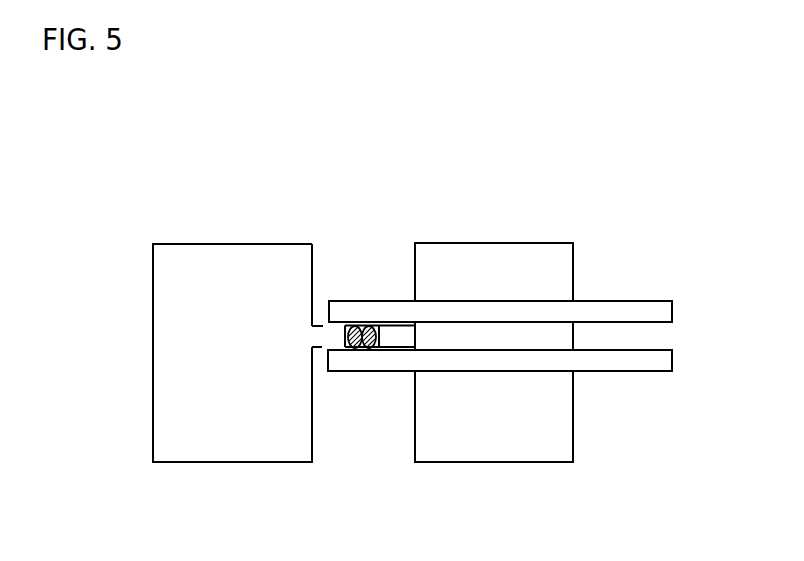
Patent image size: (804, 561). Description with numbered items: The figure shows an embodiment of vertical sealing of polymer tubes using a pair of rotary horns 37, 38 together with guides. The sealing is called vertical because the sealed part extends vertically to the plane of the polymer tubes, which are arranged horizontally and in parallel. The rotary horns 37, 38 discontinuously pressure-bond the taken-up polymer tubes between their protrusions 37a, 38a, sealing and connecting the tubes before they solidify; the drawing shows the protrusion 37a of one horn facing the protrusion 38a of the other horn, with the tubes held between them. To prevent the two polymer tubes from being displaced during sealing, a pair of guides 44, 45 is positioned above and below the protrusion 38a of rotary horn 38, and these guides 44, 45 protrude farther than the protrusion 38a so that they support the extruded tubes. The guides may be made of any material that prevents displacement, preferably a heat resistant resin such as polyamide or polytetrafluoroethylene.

The rotary horn 37 is at (249, 243).
The protrusion 37a is at (320, 335).
The rotary horn 38 is at (500, 242).
The protrusion 38a is at (399, 334).
The guide 44 is at (625, 300).
The guide 45 is at (633, 372).